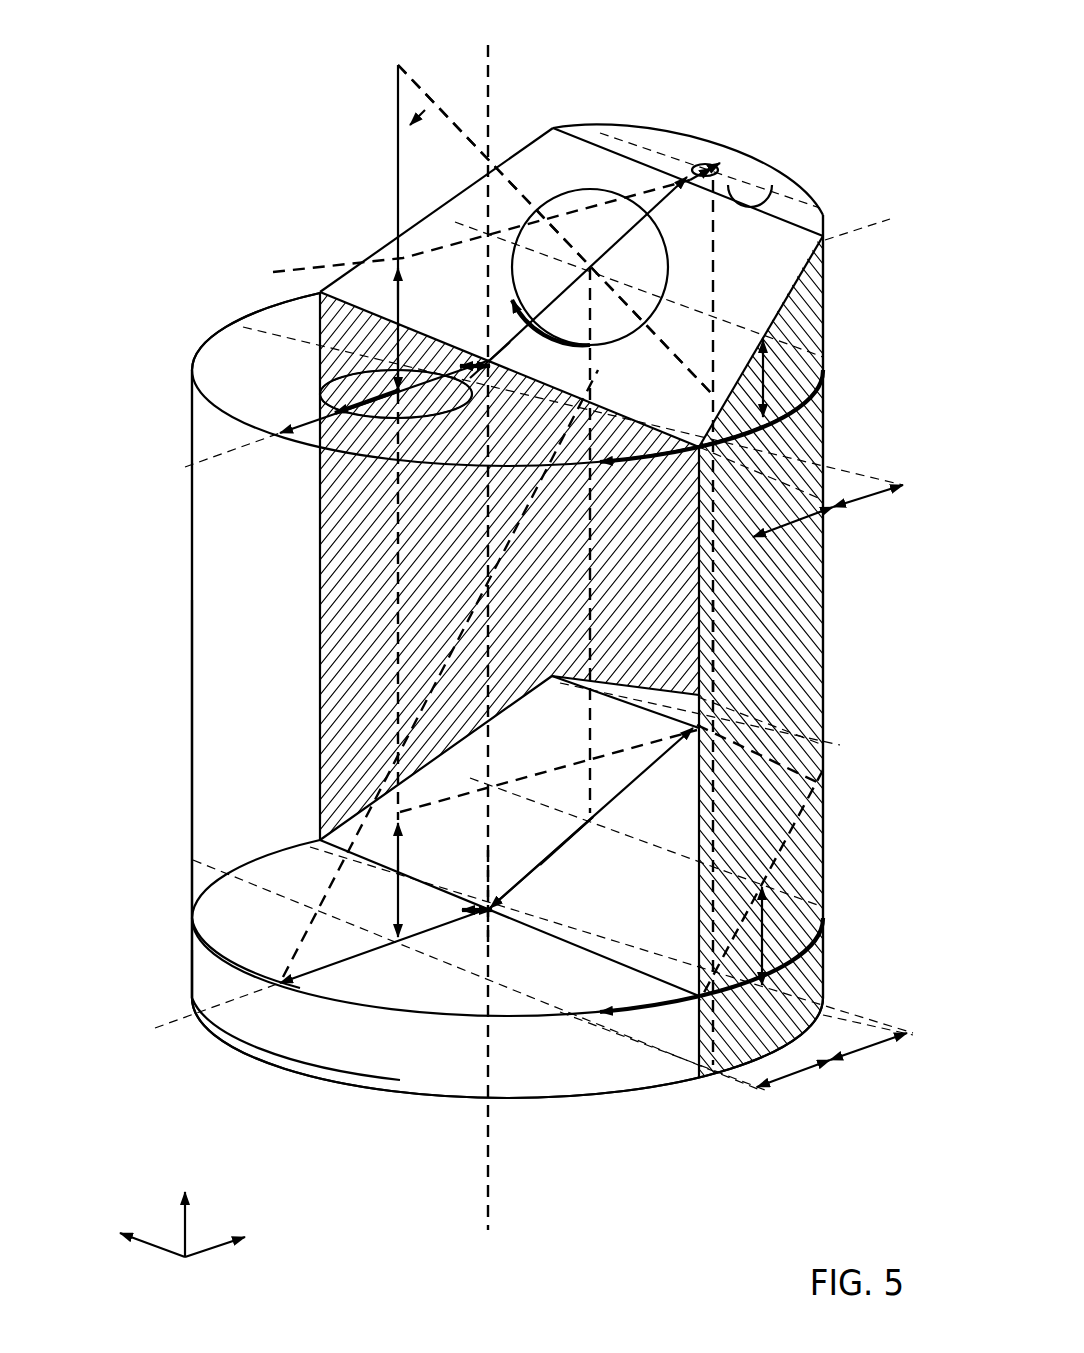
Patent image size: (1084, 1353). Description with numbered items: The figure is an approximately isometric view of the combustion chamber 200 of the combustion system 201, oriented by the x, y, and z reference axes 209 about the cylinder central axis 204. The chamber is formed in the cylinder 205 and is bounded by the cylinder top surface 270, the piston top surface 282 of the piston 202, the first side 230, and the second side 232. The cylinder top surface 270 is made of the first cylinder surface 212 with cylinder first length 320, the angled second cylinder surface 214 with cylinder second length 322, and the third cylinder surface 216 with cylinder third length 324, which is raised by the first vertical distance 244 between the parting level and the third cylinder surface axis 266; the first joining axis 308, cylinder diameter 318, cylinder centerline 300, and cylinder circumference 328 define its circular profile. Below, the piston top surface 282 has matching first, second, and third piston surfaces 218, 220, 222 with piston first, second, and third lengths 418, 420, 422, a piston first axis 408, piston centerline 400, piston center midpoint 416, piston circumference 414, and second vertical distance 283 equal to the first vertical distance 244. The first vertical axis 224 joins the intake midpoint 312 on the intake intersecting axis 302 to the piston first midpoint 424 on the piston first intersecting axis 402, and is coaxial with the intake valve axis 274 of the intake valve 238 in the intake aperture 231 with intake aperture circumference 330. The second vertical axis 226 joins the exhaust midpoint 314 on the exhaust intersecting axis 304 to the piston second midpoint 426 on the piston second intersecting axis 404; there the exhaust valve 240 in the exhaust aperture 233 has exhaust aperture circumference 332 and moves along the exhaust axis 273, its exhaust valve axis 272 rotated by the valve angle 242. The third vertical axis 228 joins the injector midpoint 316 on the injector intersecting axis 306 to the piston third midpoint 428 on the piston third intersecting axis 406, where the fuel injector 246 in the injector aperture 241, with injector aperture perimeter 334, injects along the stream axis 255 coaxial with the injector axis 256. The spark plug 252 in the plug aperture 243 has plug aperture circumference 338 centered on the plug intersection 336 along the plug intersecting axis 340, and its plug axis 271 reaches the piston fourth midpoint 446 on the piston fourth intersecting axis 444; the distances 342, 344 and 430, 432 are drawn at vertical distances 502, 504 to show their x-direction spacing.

The combustion chamber 200 is at (190, 798).
The combustion system 201 is at (207, 150).
The piston 202 is at (347, 1105).
The cylinder central axis 204 is at (487, 1215).
The cylinder 205 is at (192, 553).
The reference axes 209 is at (168, 1250).
The first cylinder surface 212 is at (248, 315).
The second cylinder surface 214 is at (552, 128).
The third cylinder surface 216 is at (605, 128).
The first piston surface 218 is at (437, 1012).
The second piston surface 220 is at (727, 955).
The third piston surface 222 is at (603, 692).
The first vertical axis 224 is at (398, 705).
The second vertical axis 226 is at (587, 712).
The third vertical axis 228 is at (717, 643).
The first side 230 is at (192, 680).
The intake aperture 231 is at (400, 409).
The second side 232 is at (823, 627).
The exhaust aperture 233 is at (555, 565).
The intake valve 238 is at (425, 418).
The exhaust valve 240 is at (643, 333).
The injector aperture 241 is at (747, 107).
The valve angle 242 is at (408, 122).
The plug aperture 243 is at (514, 394).
The first vertical distance 244 is at (410, 275).
The fuel injector 246 is at (712, 160).
The spark plug 252 is at (492, 372).
The stream axis 255 is at (198, 953).
The injector axis 256 is at (215, 955).
The third cylinder surface axis 266 is at (400, 245).
The cylinder top surface 270 is at (365, 485).
The plug axis 271 is at (458, 336).
The exhaust valve axis 272 is at (555, 200).
The exhaust axis 273 is at (425, 58).
The intake valve axis 274 is at (363, 362).
The piston top surface 282 is at (380, 845).
The second vertical distance 283 is at (397, 903).
The cylinder centerline 300 is at (183, 465).
The intake intersecting axis 302 is at (240, 318).
The exhaust intersecting axis 304 is at (468, 218).
The injector intersecting axis 306 is at (640, 135).
The first joining axis 308 is at (273, 272).
The intake midpoint 312 is at (395, 385).
The exhaust midpoint 314 is at (605, 250).
The injector midpoint 316 is at (705, 160).
The cylinder diameter 318 is at (365, 308).
The cylinder first length 320 is at (320, 417).
The cylinder second length 322 is at (657, 193).
The cylinder third length 324 is at (712, 165).
The cylinder circumference 328 is at (823, 400).
The intake aperture circumference 330 is at (385, 412).
The exhaust aperture circumference 332 is at (545, 336).
The injector aperture perimeter 334 is at (760, 197).
The plug intersection 336 is at (485, 355).
The plug aperture circumference 338 is at (473, 398).
The plug intersecting axis 340 is at (620, 458).
The distance 342 is at (790, 530).
The distance 344 is at (855, 505).
The piston centerline 400 is at (177, 1020).
The piston first intersecting axis 402 is at (250, 885).
The piston second intersecting axis 404 is at (565, 842).
The piston third intersecting axis 406 is at (668, 698).
The piston first axis 408 is at (817, 1042).
The piston circumference 414 is at (818, 965).
The piston center midpoint 416 is at (495, 915).
The piston first length 418 is at (365, 955).
The piston second length 420 is at (548, 858).
The piston third length 422 is at (700, 728).
The piston first midpoint 424 is at (400, 890).
The piston second midpoint 426 is at (593, 818).
The piston third midpoint 428 is at (710, 723).
The distance 430 is at (775, 1078).
The distance 432 is at (868, 1047).
The piston fourth intersecting axis 444 is at (580, 957).
The piston fourth midpoint 446 is at (480, 915).
The vertical distance 502 is at (775, 372).
The vertical distance 504 is at (775, 918).